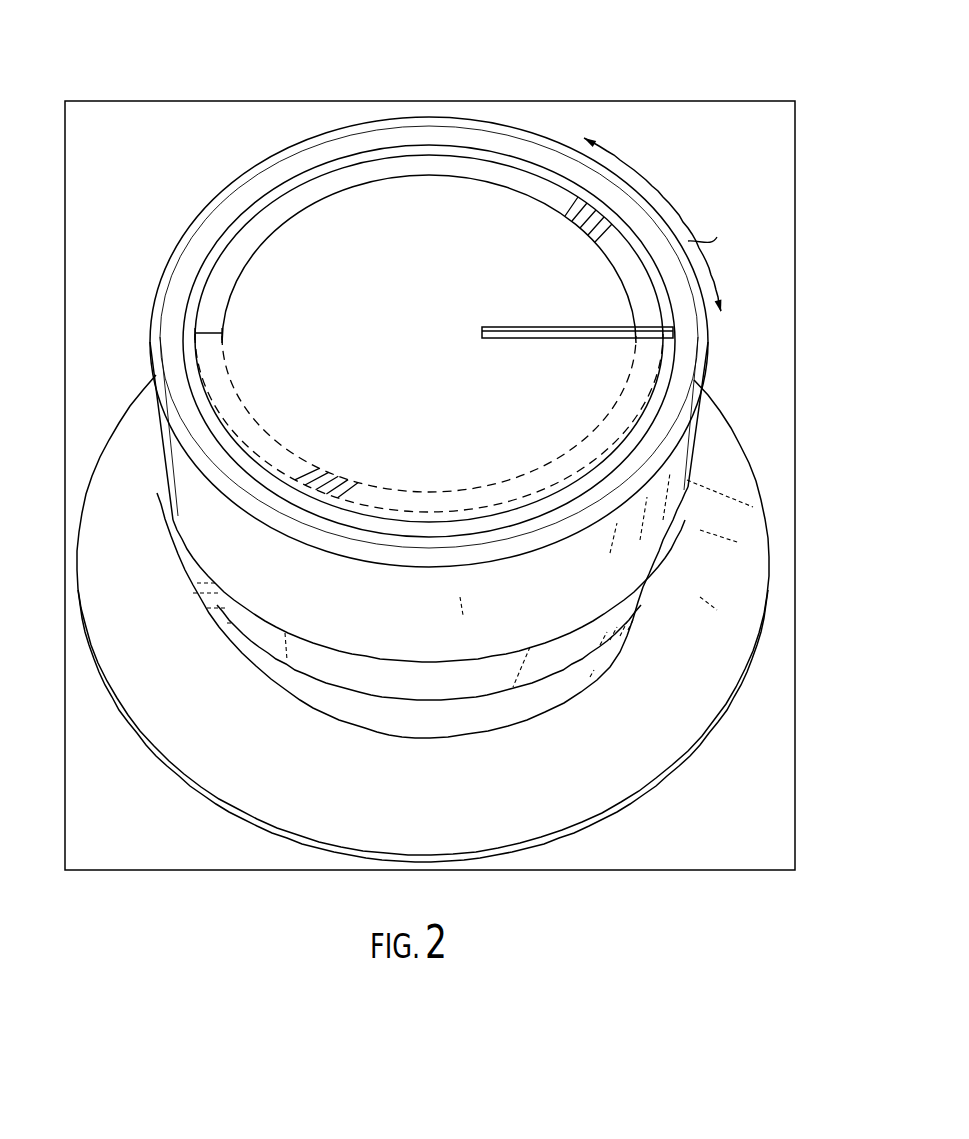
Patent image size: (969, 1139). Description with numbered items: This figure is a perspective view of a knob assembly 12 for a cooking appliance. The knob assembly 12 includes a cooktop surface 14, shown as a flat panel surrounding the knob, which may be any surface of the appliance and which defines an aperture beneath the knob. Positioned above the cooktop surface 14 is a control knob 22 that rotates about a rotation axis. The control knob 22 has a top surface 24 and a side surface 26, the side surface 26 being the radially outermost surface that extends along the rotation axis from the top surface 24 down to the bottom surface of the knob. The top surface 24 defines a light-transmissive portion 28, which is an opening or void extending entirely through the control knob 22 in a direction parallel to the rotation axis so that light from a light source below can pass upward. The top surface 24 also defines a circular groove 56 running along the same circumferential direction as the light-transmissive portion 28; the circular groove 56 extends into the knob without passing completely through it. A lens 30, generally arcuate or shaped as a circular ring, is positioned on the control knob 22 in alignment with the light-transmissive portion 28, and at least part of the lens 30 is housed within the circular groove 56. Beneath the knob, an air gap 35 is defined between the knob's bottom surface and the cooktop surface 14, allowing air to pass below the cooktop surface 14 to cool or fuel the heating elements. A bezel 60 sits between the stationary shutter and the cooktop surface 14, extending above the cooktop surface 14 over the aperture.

The knob assembly 12 is at (686, 82).
The cooktop surface 14 is at (762, 165).
The control knob 22 is at (220, 190).
The top surface 24 is at (333, 235).
The side surface 26 is at (160, 435).
The light-transmissive portion 28 is at (417, 182).
The lens 30 is at (380, 157).
The air gap 35 is at (575, 640).
The circular groove 56 is at (341, 462).
The bezel 60 is at (722, 665).